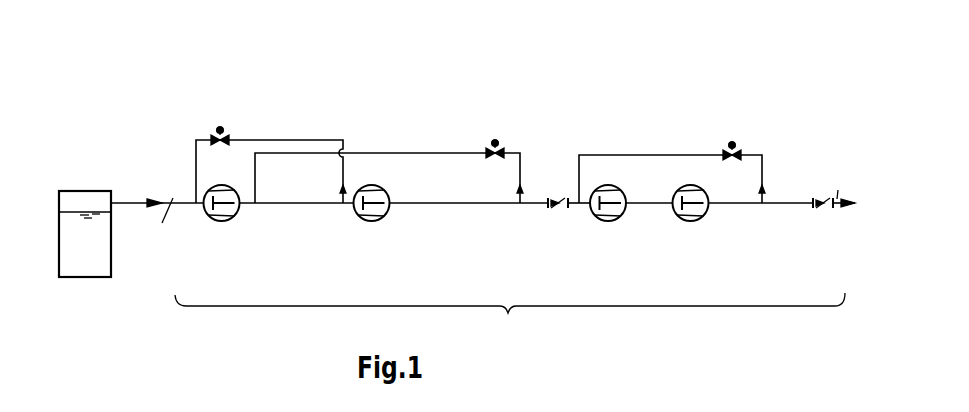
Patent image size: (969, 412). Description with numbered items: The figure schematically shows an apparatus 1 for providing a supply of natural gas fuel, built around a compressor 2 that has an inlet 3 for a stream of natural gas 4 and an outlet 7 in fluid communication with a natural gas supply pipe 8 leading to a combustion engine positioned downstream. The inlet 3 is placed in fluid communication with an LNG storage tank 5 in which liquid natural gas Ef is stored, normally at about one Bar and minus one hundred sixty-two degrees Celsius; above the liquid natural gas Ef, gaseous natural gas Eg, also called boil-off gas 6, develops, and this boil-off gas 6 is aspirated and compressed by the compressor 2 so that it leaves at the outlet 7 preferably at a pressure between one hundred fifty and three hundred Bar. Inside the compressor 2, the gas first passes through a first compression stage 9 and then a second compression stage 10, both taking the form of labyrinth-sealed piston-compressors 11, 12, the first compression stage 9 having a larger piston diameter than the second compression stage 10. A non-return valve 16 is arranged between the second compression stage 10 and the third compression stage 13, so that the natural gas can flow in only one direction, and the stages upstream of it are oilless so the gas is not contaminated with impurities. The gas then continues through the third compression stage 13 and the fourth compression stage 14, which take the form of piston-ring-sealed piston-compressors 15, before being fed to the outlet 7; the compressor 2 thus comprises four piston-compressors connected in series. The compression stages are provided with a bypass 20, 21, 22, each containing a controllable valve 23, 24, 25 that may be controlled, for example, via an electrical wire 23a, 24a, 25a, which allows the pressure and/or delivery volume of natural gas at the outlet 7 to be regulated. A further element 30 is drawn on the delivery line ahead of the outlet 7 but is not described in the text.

The apparatus 1 is at (707, 84).
The compressor 2 is at (510, 322).
The inlet 3 is at (164, 225).
The stream of natural gas 4 is at (133, 205).
The LNG storage tank 5 is at (73, 278).
The boil-off gas 6 is at (72, 195).
The gaseous natural gas Eg is at (98, 197).
The liquid natural gas Ef is at (97, 278).
The outlet 7 is at (838, 175).
The natural gas supply pipe 8 is at (845, 212).
The first compression stage 9 is at (225, 216).
The second compression stage 10 is at (377, 214).
The piston-compressor 11 is at (224, 224).
The piston-compressor 12 is at (382, 229).
The third compression stage 13 is at (607, 219).
The fourth compression stage 14 is at (695, 216).
The piston-ring-sealed piston-compressor 15 is at (657, 229).
The non-return valve 16 is at (552, 210).
The bypass 20 is at (306, 138).
The bypass 21 is at (410, 152).
The bypass 22 is at (641, 153).
The controllable valve 23 is at (228, 134).
The electrical wire 23a is at (218, 115).
The controllable valve 24 is at (504, 151).
The electrical wire 24a is at (500, 124).
The controllable valve 25 is at (742, 154).
The electrical wire 25a is at (740, 126).
The check valve 30 is at (822, 211).